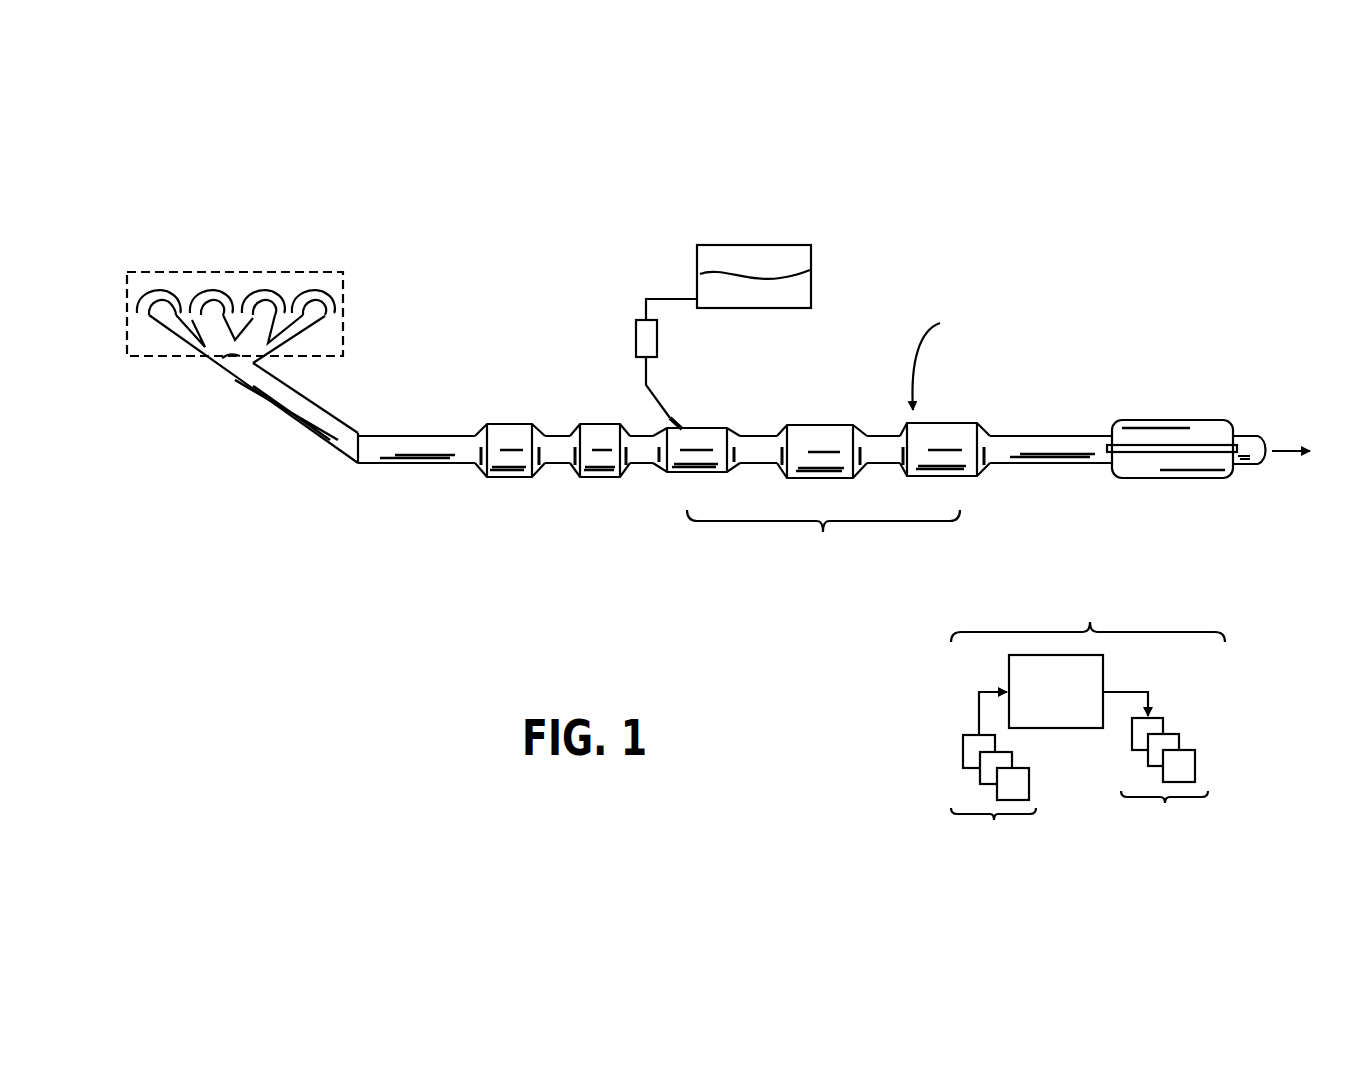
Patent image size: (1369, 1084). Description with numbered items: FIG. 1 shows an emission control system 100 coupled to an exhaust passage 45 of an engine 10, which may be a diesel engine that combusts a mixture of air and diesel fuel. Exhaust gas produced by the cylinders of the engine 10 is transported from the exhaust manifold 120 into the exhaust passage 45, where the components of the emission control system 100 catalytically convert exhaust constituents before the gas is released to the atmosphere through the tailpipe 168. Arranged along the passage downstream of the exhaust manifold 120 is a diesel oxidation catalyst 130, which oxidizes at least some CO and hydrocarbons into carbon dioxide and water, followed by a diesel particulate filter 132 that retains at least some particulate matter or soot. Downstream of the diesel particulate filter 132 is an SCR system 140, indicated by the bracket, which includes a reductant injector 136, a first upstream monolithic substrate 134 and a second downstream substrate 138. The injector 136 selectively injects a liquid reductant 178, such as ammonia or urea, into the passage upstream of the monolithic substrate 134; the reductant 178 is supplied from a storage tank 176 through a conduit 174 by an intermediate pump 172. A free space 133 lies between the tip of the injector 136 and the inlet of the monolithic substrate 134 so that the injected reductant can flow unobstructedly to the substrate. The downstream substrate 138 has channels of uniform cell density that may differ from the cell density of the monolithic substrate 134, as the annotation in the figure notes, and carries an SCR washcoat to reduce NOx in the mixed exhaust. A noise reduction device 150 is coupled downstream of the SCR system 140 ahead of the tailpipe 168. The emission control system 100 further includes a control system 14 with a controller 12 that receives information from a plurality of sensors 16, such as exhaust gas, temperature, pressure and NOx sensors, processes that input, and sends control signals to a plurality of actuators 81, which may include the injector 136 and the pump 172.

The emission control system 100 is at (1046, 216).
The engine 10 is at (266, 271).
The exhaust manifold 120 is at (205, 362).
The exhaust passage 45 is at (335, 417).
The diesel oxidation catalyst 130 is at (497, 423).
The diesel particulate filter 132 is at (590, 423).
The reductant injector 136 is at (676, 422).
The free space 133 is at (743, 431).
The first upstream monolithic substrate 134 is at (817, 424).
The second downstream substrate 138 is at (920, 421).
The SCR system 140 is at (823, 536).
The noise reduction device 150 is at (1173, 420).
The tailpipe 168 is at (1240, 435).
The pump 172 is at (636, 340).
The conduit 174 is at (678, 297).
The storage tank 176 is at (813, 287).
The liquid reductant 178 is at (739, 285).
The control system 14 is at (1088, 609).
The controller 12 is at (1056, 691).
The sensors 16 is at (993, 778).
The actuators 81 is at (1155, 770).